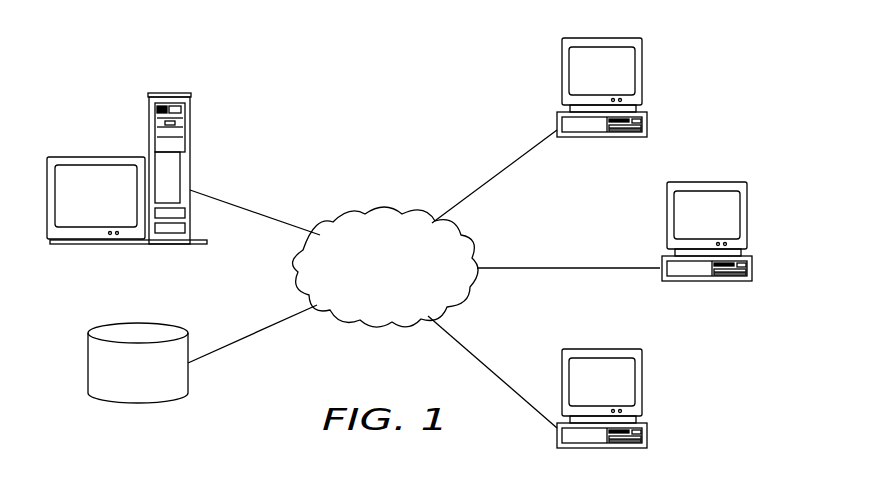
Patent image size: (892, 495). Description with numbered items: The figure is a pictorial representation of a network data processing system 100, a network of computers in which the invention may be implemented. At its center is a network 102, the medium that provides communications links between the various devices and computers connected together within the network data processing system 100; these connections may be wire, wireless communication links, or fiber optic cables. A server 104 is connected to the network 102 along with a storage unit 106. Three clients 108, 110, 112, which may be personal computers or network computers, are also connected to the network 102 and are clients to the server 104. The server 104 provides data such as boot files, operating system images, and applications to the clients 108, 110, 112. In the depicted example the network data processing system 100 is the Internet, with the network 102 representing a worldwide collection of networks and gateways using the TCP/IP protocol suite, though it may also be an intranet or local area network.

The network data processing system 100 is at (274, 104).
The network 102 is at (407, 294).
The server 104 is at (149, 118).
The storage unit 106 is at (87, 360).
The client 108 is at (643, 80).
The client 110 is at (750, 222).
The client 112 is at (643, 390).